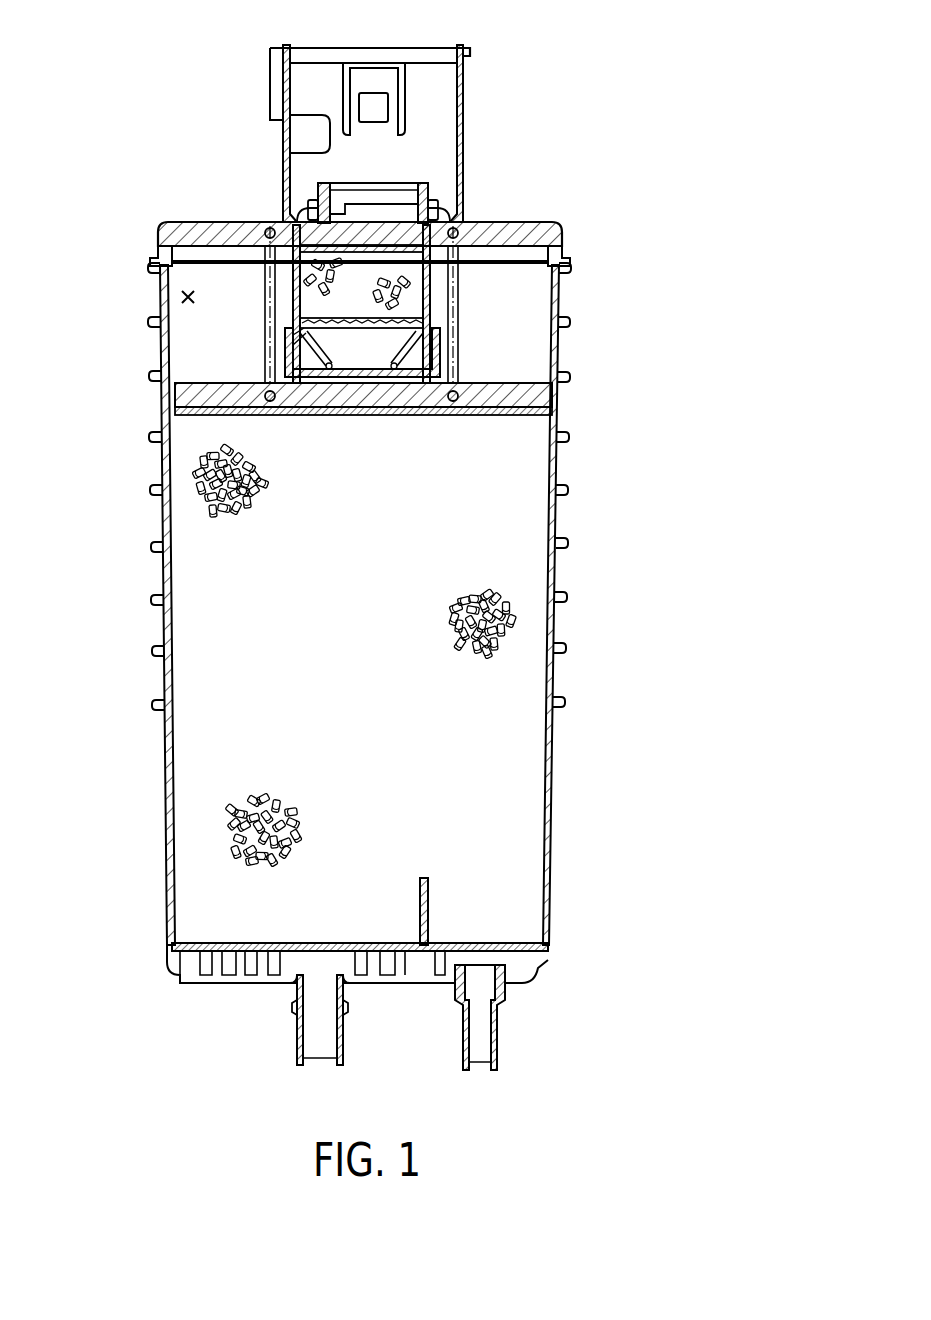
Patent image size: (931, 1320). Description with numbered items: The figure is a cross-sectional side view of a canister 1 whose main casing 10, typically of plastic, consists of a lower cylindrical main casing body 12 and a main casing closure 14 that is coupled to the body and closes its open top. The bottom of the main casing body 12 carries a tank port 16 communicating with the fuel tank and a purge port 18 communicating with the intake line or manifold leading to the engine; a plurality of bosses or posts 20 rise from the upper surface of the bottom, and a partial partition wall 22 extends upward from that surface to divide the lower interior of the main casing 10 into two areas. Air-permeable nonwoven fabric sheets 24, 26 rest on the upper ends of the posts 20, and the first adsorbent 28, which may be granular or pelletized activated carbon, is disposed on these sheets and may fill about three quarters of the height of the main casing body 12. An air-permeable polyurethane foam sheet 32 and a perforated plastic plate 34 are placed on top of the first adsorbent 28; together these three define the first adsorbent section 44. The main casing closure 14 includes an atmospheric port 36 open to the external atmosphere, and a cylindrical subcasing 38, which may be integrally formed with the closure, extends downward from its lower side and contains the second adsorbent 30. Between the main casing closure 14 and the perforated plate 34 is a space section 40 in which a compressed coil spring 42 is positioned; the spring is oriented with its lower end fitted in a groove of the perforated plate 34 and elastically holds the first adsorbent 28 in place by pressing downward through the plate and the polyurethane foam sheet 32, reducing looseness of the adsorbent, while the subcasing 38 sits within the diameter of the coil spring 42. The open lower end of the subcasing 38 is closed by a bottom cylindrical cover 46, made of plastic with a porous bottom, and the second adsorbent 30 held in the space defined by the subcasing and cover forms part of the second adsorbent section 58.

The canister 1 is at (123, 155).
The main casing 10 is at (648, 224).
The main casing body 12 is at (560, 300).
The main casing closure 14 is at (556, 226).
The tank port 16 is at (298, 1046).
The purge port 18 is at (463, 1052).
The posts 20 is at (266, 965).
The partial partition wall 22 is at (430, 878).
The air-permeable nonwoven fabric sheet 24 is at (246, 945).
The air-permeable nonwoven fabric sheet 26 is at (500, 946).
The first adsorbent 28 is at (216, 481).
The second adsorbent 30 is at (412, 294).
The polyurethane foam sheet 32 is at (205, 413).
The perforated plate 34 is at (178, 393).
The atmospheric port 36 is at (420, 184).
The subcasing 38 is at (293, 298).
The space section 40 is at (185, 296).
The coil spring 42 is at (266, 231).
The first adsorbent section 44 is at (78, 372).
The cover 46 is at (408, 376).
The second adsorbent section 58 is at (361, 304).